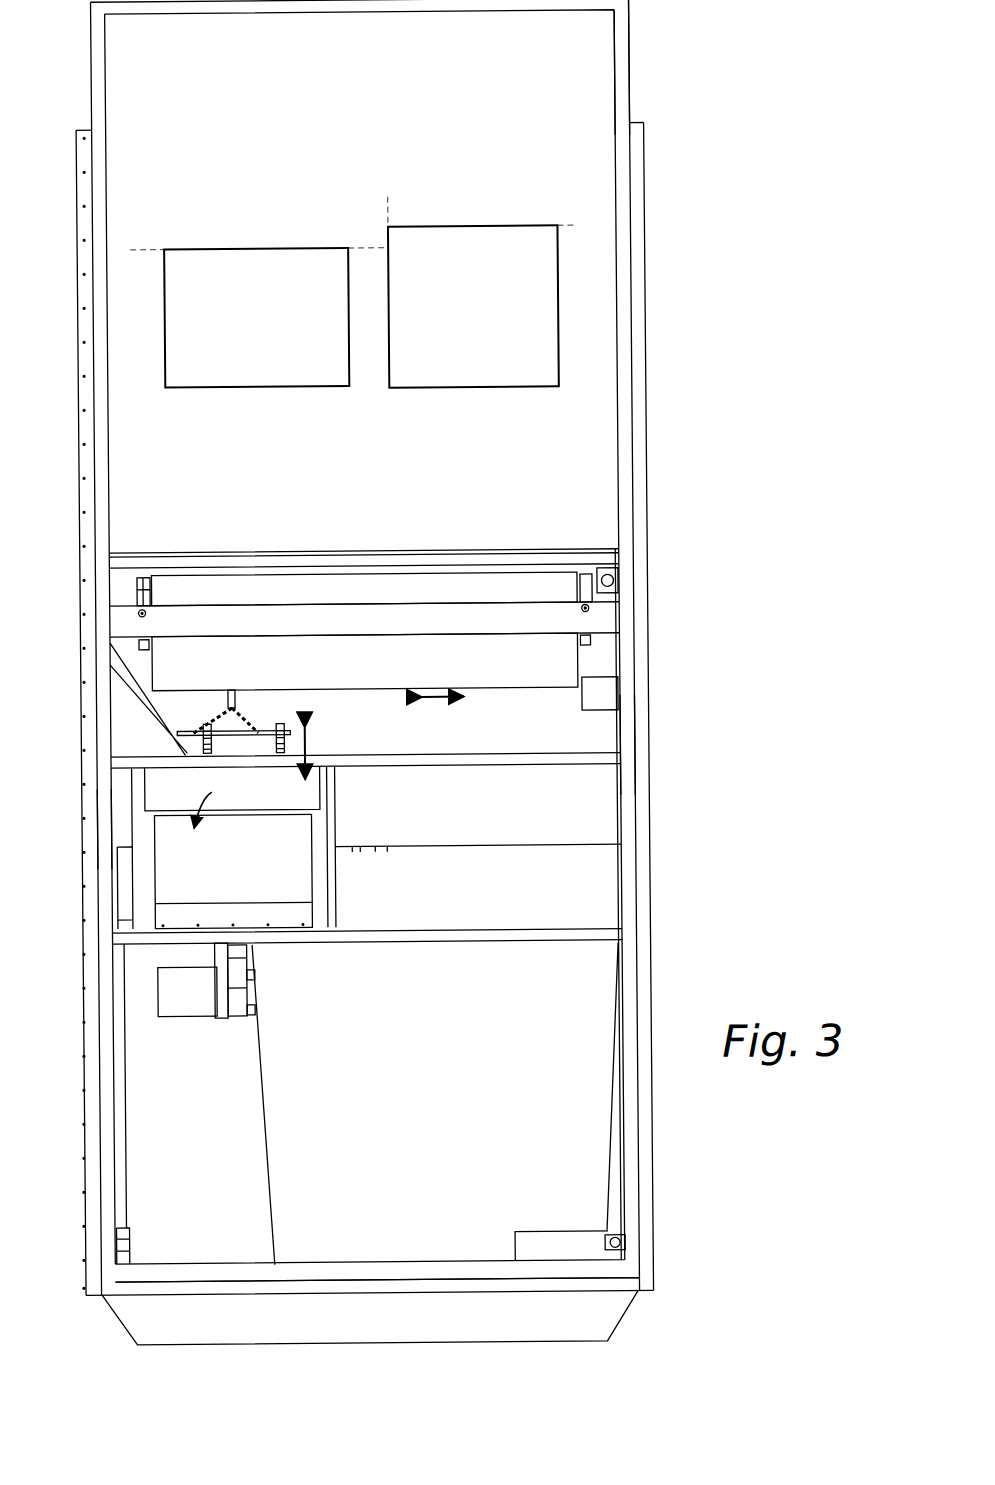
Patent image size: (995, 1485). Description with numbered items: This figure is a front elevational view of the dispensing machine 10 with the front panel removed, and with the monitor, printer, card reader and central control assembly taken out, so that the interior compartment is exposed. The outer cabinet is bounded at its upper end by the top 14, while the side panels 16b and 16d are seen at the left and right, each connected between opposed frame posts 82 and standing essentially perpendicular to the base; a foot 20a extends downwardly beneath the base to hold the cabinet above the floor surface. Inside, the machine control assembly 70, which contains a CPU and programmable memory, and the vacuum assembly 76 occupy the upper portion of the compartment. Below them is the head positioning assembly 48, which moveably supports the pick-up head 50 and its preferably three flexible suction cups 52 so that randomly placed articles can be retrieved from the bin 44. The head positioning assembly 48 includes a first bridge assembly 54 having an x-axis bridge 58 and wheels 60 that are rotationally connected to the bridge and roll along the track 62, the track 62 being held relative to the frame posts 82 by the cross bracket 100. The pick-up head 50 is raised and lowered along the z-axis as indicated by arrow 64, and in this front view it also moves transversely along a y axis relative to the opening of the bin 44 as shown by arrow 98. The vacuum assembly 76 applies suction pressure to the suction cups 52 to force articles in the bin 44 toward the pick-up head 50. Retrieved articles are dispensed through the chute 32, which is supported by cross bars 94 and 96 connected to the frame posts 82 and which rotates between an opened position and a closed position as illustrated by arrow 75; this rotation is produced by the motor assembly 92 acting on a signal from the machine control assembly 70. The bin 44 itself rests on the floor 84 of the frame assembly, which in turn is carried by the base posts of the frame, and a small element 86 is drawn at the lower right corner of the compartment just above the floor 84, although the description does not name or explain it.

The dispensing machine 10 is at (695, 475).
The top 14 is at (645, 112).
The side panel 16b is at (84, 833).
The side panel 16d is at (655, 752).
The foot 20a is at (601, 1325).
The chute 32 is at (281, 847).
The bin 44 is at (575, 1110).
The head positioning assembly 48 is at (140, 660).
The pick-up head 50 is at (190, 710).
The suction cups 52 is at (240, 742).
The first bridge assembly 54 is at (273, 589).
The x-axis bridge 58 is at (250, 678).
The wheels 60 is at (139, 577).
The track 62 is at (133, 612).
The arrow 64 is at (305, 753).
The machine control assembly 70 is at (239, 335).
The arrow 75 is at (205, 794).
The vacuum assembly 76 is at (438, 331).
The frame posts 82 is at (98, 107).
The floor 84 is at (602, 1288).
The foot bracket 86 is at (597, 1275).
The motor assembly 92 is at (164, 1000).
The cross bar 94 is at (524, 764).
The cross bar 96 is at (537, 952).
The arrow 98 is at (436, 700).
The cross bracket 100 is at (360, 636).